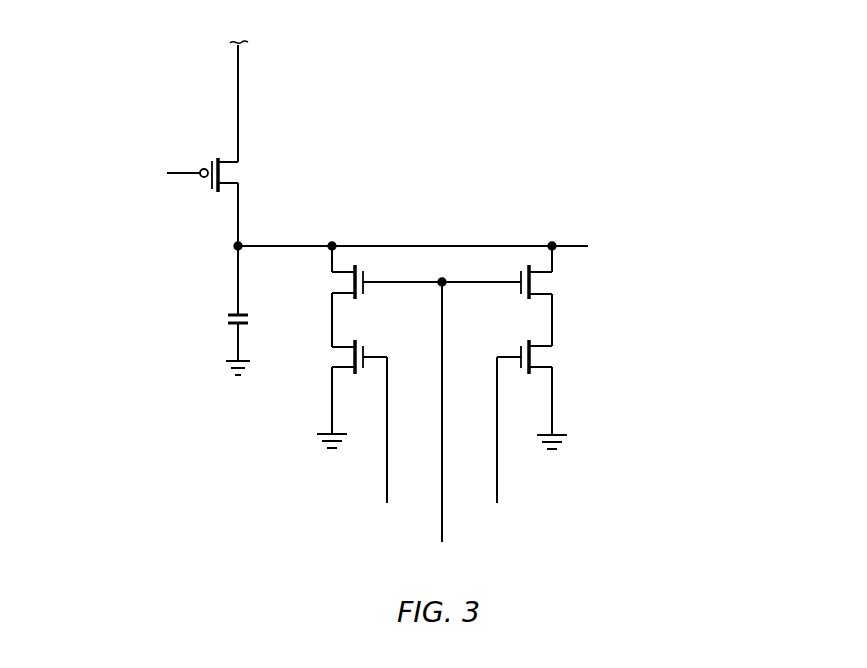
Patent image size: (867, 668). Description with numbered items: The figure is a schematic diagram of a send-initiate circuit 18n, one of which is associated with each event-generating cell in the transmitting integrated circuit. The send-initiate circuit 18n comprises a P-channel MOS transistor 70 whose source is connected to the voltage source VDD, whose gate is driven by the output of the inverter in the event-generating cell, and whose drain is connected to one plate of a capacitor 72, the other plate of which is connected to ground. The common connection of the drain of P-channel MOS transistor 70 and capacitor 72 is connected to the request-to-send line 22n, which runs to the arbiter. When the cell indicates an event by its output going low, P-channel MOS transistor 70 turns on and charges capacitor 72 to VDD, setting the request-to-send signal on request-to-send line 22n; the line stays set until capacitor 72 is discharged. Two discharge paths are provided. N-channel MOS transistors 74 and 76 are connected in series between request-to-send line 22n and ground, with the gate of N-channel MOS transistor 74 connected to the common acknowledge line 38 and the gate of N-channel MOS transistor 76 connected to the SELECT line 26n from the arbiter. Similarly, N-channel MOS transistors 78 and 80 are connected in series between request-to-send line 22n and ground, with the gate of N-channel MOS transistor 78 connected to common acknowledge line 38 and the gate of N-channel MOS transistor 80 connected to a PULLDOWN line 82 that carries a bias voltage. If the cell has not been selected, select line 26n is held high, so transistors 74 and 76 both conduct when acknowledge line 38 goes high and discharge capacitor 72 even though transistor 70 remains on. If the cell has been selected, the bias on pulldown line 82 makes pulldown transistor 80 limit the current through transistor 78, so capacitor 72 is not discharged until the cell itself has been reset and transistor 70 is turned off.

The send-initiate circuit 18n is at (418, 137).
The request-to-send line 22n is at (494, 244).
The SELECT line 26n is at (500, 462).
The common acknowledge line 38 is at (440, 312).
The P-channel MOS transistor 70 is at (238, 174).
The capacitor 72 is at (227, 320).
The N-channel MOS transistor 74 is at (552, 280).
The N-channel MOS transistor 76 is at (552, 355).
The N-channel MOS transistor 78 is at (336, 282).
The N-channel MOS transistor 80 is at (336, 357).
The PULLDOWN line 82 is at (385, 468).